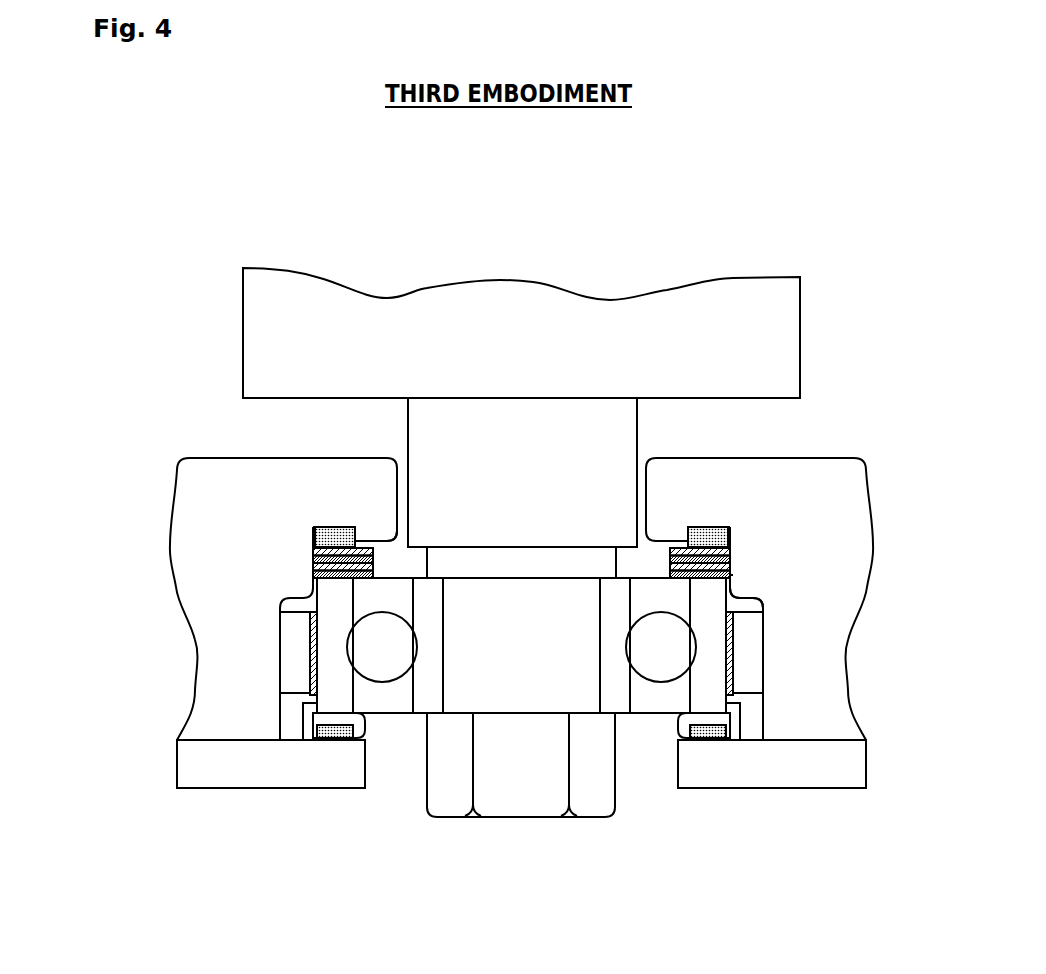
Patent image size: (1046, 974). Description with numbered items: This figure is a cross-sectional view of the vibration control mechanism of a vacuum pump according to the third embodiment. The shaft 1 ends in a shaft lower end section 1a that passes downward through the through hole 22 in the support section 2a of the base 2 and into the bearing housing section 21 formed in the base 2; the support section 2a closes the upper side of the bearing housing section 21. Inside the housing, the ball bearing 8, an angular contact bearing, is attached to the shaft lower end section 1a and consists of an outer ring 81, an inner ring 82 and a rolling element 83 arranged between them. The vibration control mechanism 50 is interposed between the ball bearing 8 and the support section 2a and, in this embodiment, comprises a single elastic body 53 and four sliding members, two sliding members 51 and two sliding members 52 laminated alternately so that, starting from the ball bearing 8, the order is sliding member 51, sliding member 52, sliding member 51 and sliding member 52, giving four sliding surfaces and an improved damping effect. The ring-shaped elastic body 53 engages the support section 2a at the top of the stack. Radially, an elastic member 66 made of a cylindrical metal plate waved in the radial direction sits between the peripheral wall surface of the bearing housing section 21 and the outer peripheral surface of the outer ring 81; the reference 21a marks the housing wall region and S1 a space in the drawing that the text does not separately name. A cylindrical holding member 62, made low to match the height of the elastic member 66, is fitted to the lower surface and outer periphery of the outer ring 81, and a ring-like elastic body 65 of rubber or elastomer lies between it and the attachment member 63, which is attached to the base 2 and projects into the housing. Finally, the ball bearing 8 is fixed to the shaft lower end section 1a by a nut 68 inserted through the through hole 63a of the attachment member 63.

The shaft 1 is at (547, 338).
The shaft lower end section 1a is at (597, 455).
The base 2 is at (826, 655).
The support section 2a is at (703, 488).
The bearing housing section 21 is at (285, 722).
The stepped inner peripheral surface 21a is at (735, 582).
The through hole 22 is at (400, 522).
The vibration control mechanism 50 is at (385, 487).
The sliding member 51 is at (313, 558).
The sliding member 52 is at (313, 551).
The elastic body 53 is at (313, 528).
The cylindrical holding member 62 is at (733, 740).
The attachment member 63 is at (815, 785).
The through hole 63a is at (655, 773).
The ring-like elastic body 65 is at (335, 738).
The elastic member 66 is at (290, 643).
The nut 68 is at (530, 783).
The ball bearing 8 is at (620, 730).
The outer ring 81 is at (330, 693).
The inner ring 82 is at (427, 703).
The rolling element 83 is at (390, 667).
The space S1 is at (732, 580).